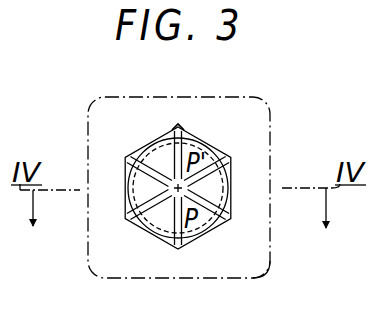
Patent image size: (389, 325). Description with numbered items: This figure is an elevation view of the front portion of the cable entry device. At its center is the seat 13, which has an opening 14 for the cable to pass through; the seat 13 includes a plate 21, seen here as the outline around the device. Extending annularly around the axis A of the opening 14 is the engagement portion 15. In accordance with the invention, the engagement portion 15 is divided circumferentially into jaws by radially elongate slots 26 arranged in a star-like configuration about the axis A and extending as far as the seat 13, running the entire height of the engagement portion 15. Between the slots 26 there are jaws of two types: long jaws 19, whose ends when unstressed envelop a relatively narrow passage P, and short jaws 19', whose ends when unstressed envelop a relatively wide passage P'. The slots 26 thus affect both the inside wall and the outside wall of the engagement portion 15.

The seat 13 is at (276, 240).
The opening 14 is at (215, 160).
The engagement portion 15 is at (207, 128).
The long jaw 19 is at (159, 169).
The short jaw 19' is at (216, 194).
The plate 21 is at (271, 264).
The radially elongate slot 26 is at (173, 128).
The axis A is at (175, 193).